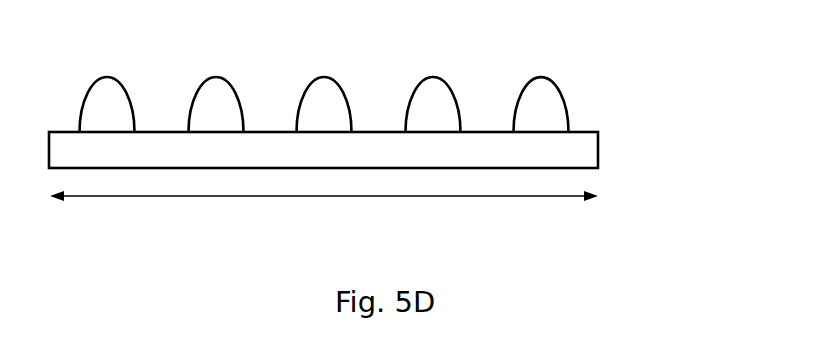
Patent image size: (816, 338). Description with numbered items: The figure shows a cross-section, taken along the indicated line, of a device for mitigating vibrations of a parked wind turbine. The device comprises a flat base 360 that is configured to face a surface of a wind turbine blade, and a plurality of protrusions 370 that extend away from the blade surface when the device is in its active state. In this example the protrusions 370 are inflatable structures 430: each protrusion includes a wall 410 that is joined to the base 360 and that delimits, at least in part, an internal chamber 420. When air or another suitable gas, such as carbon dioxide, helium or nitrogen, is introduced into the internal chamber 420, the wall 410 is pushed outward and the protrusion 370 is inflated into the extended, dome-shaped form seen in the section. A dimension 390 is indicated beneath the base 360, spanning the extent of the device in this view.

The base 360 is at (575, 153).
The protrusions 370 is at (536, 100).
The width of substrate 390 is at (324, 199).
The wall 410 is at (299, 94).
The internal chamber 420 is at (323, 100).
The inflatable structures 430 is at (429, 100).